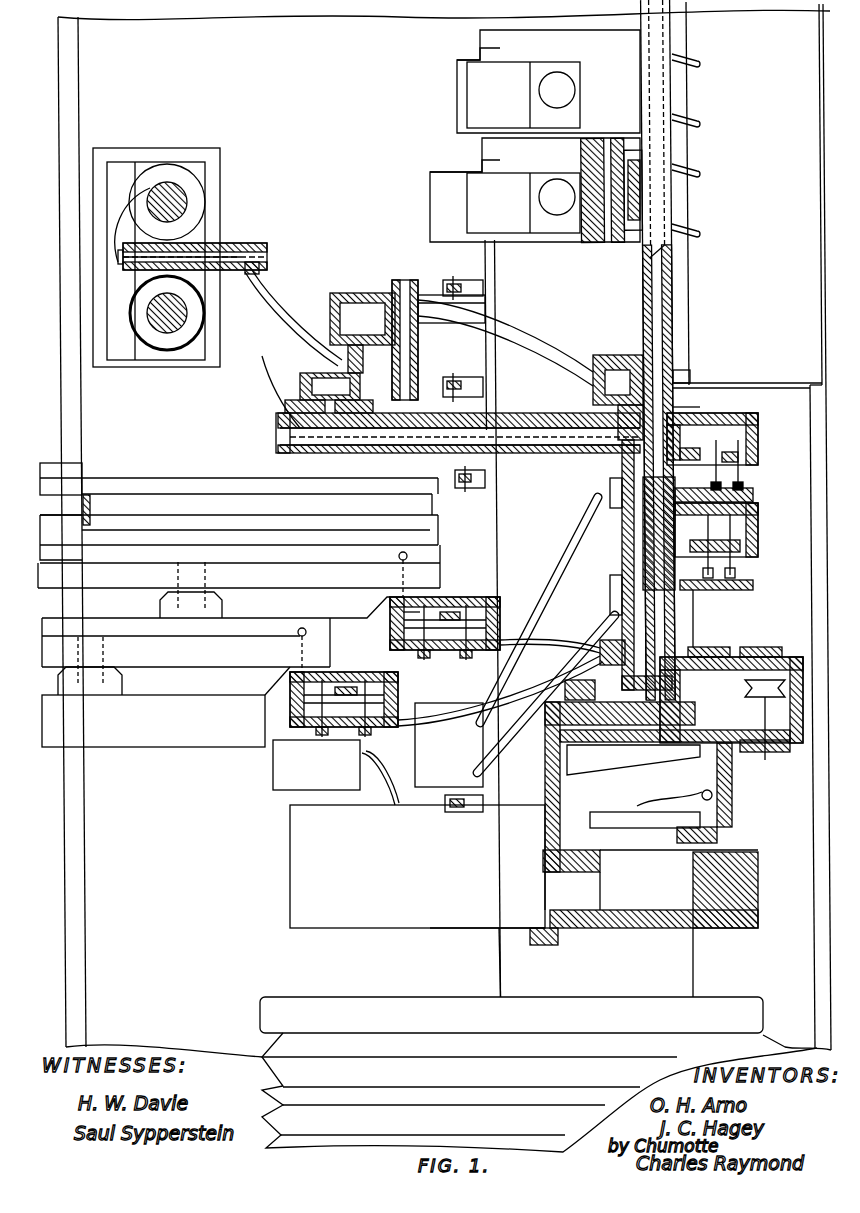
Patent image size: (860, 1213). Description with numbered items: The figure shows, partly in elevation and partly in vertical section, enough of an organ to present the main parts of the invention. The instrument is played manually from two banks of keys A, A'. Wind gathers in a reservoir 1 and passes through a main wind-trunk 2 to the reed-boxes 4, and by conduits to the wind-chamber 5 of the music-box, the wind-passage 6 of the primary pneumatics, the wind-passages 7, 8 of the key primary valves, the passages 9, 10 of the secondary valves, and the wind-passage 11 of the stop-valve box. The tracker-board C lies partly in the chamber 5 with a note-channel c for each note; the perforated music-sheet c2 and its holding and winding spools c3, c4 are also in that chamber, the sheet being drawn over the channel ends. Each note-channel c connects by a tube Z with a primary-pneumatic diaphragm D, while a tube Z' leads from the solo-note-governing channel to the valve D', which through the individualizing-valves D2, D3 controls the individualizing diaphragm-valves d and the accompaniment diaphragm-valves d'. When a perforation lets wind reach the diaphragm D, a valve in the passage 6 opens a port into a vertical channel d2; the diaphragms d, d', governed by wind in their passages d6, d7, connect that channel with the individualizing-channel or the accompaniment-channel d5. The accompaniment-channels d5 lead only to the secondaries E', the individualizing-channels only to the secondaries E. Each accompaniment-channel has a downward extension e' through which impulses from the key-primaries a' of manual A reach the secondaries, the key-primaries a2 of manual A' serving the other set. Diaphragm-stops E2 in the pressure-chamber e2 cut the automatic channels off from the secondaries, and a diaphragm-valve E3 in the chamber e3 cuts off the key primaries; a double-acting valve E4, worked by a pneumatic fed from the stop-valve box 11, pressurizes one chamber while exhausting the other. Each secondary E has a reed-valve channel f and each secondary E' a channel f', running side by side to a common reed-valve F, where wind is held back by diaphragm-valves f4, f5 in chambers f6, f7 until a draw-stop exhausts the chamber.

The reservoir 1 is at (410, 1055).
The main wind-trunk 2 is at (561, 962).
The reed-boxes 4 is at (540, 108).
The wind-chamber of the music-box 5 is at (118, 182).
The wind-passage of the primary pneumatics 6 is at (380, 312).
The wind-passage of the key primary valves 7 is at (488, 622).
The wind-passage of the key primary valves 8 is at (470, 700).
The passage of the secondary valves 9 is at (738, 428).
The passage of the secondary valves 10 is at (742, 518).
The wind-passage of the stop-valve box 11 is at (316, 765).
The bank of keys A is at (216, 696).
The bank of keys A' is at (239, 540).
The key-primaries a' is at (317, 739).
The key-primaries a2 is at (392, 636).
The tracker-board C is at (200, 250).
The note-channels c is at (180, 260).
The perforated music-sheet c2 is at (130, 232).
The holding spool c3 is at (172, 200).
The winding spool c4 is at (190, 314).
The tube Z is at (293, 314).
The tube Z' is at (267, 388).
The primary-pneumatic diaphragm D is at (301, 395).
The valve D' is at (502, 479).
The individualizing-valve D2 is at (484, 392).
The individualizing-valve D3 is at (484, 295).
The individualizing diaphragm-valves d is at (429, 445).
The accompaniment diaphragm-valves d' is at (290, 422).
The vertical channel d2 is at (430, 348).
The accompaniment-channel d5 is at (345, 440).
The passage d6 is at (290, 432).
The passage d7 is at (288, 406).
The secondary valves E is at (737, 552).
The secondary valves E' is at (759, 465).
The diaphragm-stops E2 is at (608, 518).
The diaphragm-valve E3 is at (606, 618).
The double-acting valve E4 is at (452, 800).
The extension e' is at (650, 565).
The pressure-chamber e2 is at (610, 500).
The diaphragm-chamber e3 is at (608, 595).
The reed-valve F is at (612, 140).
The reed-valve channel f is at (719, 533).
The reed-valve channel f' is at (707, 472).
The diaphragm-valve f4 is at (650, 226).
The diaphragm-valve f5 is at (655, 145).
The chamber f6 is at (648, 212).
The chamber f7 is at (648, 165).